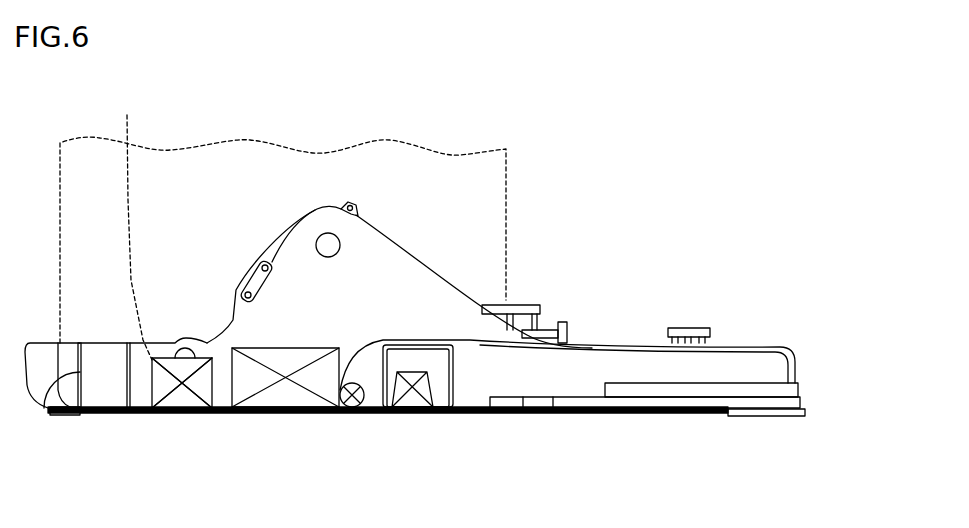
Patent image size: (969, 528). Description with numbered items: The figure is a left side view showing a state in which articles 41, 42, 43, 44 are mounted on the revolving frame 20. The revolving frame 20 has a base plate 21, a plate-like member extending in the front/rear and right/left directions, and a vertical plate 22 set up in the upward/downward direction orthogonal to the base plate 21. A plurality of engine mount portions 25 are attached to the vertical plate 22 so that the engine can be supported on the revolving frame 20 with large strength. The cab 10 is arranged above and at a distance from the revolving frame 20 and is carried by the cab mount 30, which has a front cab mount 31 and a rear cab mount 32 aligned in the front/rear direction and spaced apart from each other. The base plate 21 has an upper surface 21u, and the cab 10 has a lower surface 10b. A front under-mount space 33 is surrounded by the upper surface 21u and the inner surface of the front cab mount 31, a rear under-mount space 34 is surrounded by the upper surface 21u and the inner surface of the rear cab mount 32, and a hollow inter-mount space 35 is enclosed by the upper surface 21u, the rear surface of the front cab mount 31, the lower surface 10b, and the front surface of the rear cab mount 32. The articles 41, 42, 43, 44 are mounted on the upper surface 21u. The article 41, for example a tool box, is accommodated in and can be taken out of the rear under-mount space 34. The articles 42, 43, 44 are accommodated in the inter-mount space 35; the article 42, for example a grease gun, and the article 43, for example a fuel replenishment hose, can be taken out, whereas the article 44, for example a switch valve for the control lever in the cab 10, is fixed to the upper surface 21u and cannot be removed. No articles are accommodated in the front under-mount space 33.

The cab 10 is at (328, 150).
The lower surface 10b is at (130, 227).
The revolving frame 20 is at (678, 176).
The base plate 21 is at (213, 393).
The upper surface 21u is at (172, 400).
The vertical plate 22 is at (383, 260).
The engine mount portion 25 is at (550, 323).
The cab mount 30 is at (50, 405).
The front cab mount 31 is at (50, 413).
The rear cab mount 32 is at (570, 412).
The front under-mount space 33 is at (105, 385).
The rear under-mount space 34 is at (440, 392).
The inter-mount space 35 is at (143, 410).
The article 41 is at (410, 397).
The article 42 is at (348, 403).
The article 43 is at (287, 400).
The article 44 is at (190, 400).